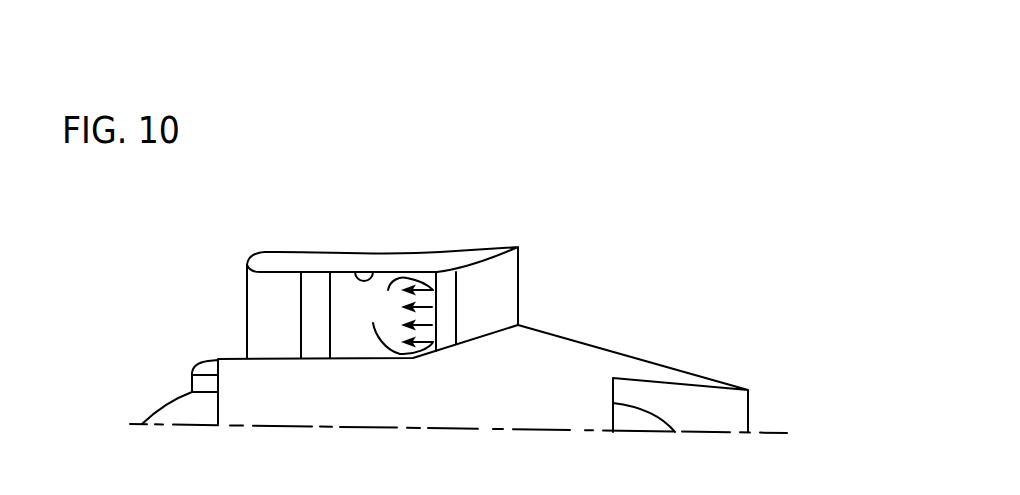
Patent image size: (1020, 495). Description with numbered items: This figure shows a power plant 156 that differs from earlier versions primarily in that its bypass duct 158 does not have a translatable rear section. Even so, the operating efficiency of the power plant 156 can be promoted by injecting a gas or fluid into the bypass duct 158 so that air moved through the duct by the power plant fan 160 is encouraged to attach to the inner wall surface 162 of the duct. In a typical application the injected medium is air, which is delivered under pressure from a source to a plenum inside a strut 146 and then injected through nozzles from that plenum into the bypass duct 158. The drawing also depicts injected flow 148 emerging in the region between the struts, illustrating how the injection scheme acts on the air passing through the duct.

The strut 146 is at (456, 310).
The cooling air flow 148 is at (388, 290).
The power plant 156 is at (205, 294).
The bypass duct 158 is at (291, 252).
The power plant fan 160 is at (301, 343).
The inner wall surface 162 is at (375, 277).